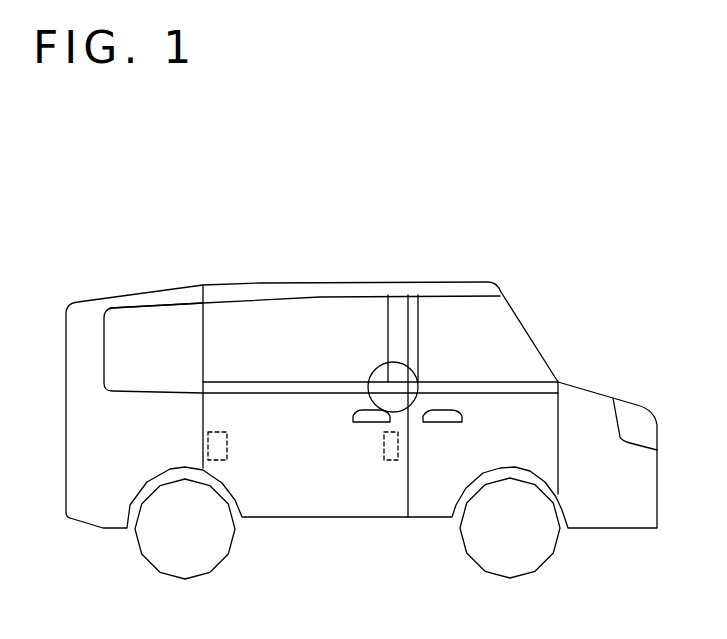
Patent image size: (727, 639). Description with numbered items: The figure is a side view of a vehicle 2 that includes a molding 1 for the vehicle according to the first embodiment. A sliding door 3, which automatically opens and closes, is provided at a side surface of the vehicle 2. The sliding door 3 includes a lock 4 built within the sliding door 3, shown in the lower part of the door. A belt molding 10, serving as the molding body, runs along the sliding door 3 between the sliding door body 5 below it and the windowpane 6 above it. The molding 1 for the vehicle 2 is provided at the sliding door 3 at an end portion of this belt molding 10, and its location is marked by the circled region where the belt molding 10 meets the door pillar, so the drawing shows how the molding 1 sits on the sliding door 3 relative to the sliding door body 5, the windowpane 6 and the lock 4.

The molding for a vehicle 1 is at (396, 362).
The vehicle 2 is at (473, 217).
The sliding door 3 is at (333, 517).
The lock 4 is at (225, 458).
The sliding door body 5 is at (304, 499).
The windowpane 6 is at (338, 313).
The belt molding 10 is at (330, 388).